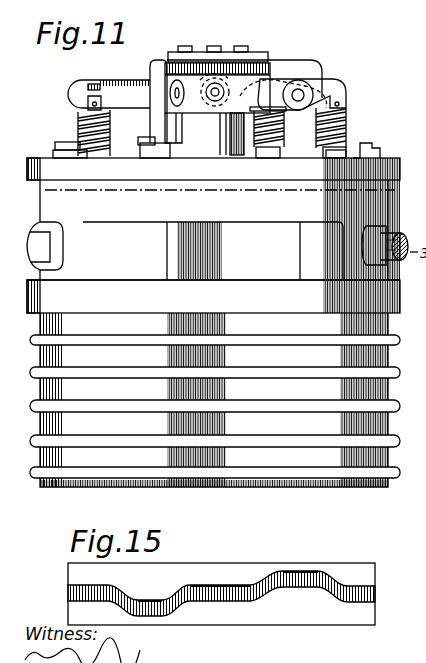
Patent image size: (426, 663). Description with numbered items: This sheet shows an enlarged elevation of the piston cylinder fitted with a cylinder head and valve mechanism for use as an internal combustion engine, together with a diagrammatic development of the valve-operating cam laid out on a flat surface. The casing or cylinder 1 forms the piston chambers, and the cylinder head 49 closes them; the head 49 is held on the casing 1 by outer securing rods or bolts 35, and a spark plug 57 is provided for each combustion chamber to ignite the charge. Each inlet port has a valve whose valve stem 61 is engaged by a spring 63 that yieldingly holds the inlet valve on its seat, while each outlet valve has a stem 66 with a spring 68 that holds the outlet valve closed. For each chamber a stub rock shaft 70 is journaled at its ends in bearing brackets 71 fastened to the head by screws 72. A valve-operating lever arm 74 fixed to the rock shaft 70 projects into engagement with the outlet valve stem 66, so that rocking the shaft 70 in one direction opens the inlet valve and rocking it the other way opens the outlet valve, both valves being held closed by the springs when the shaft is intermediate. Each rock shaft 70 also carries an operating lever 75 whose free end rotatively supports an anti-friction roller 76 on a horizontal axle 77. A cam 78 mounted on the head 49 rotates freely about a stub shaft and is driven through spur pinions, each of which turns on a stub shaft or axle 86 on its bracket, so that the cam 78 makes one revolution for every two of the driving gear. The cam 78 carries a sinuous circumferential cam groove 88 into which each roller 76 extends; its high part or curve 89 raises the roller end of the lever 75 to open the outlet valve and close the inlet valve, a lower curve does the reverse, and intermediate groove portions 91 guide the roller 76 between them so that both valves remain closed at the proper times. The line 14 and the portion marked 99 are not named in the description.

In FIG. 11, the casing or cylinder 1 is at (216, 307).
In FIG. 11, the section line 14 is at (22, 208).
In FIG. 11, the outer securing rods or bolts 35 is at (173, 260).
In FIG. 11, the cylinder head 49 is at (62, 170).
In FIG. 11, the spark plug 57 is at (48, 247).
In FIG. 11, the valve stem 61 is at (282, 125).
In FIG. 11, the spring 63 is at (232, 122).
In FIG. 11, the stem 66 is at (80, 118).
In FIG. 11, the spring 68 is at (170, 85).
In FIG. 11, the stub rock shaft 70 is at (130, 88).
In FIG. 11, the bearing brackets 71 is at (280, 152).
In FIG. 11, the screws 72 is at (268, 152).
In FIG. 11, the valve-operating lever arm 74 is at (95, 86).
In FIG. 11, the operating lever 75 is at (250, 88).
In FIG. 11, the anti-friction roller 76 is at (210, 94).
In FIG. 15, the anti-friction roller 76 is at (254, 572).
In FIG. 11, the horizontal axle 77 is at (214, 102).
In FIG. 11, the cam 78 is at (160, 60).
In FIG. 11, the stub shaft or axle 86 is at (236, 52).
In FIG. 15, the circumferential cam groove 88 is at (97, 598).
In FIG. 15, the high part or curve 89 is at (325, 590).
In FIG. 15, the intermediate groove portions 91 is at (247, 607).
In FIG. 15, the recess 99 is at (163, 613).